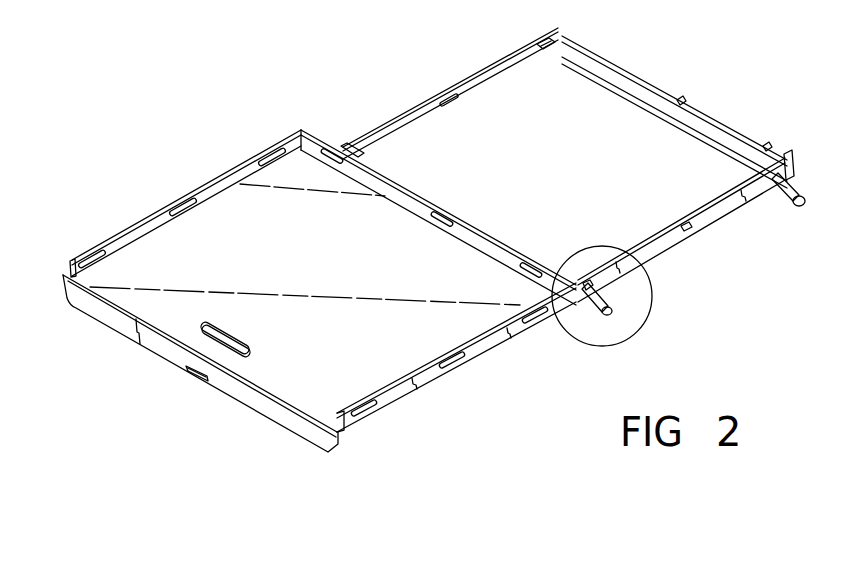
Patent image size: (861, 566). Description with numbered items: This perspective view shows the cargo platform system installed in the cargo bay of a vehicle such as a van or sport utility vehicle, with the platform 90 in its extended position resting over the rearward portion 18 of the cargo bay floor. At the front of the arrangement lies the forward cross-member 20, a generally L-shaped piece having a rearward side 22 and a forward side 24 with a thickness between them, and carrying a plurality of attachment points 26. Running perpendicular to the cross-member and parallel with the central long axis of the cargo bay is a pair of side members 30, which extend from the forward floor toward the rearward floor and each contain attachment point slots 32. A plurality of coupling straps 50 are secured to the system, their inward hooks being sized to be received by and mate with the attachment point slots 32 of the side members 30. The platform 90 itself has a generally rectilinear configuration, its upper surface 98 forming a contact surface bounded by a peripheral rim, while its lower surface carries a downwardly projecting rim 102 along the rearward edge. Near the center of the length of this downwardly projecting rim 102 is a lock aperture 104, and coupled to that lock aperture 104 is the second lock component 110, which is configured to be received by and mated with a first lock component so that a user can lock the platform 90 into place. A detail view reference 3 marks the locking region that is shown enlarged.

The rearward portion 18 is at (375, 2).
The forward cross-member 20 is at (573, 151).
The rearward side 22 is at (540, 46).
The forward side 24 is at (614, 62).
The attachment points 26 is at (767, 145).
The side members 30 is at (418, 121).
The attachment point slot 32 is at (688, 230).
The coupling straps 50 is at (584, 306).
The platform 90 is at (178, 240).
The upper surface 98 is at (338, 273).
The downwardly projecting rim 102 is at (118, 322).
The lock aperture 104 is at (198, 377).
The second lock component 110 is at (186, 374).
The detail view reference (FIG. 3) 3 is at (653, 297).